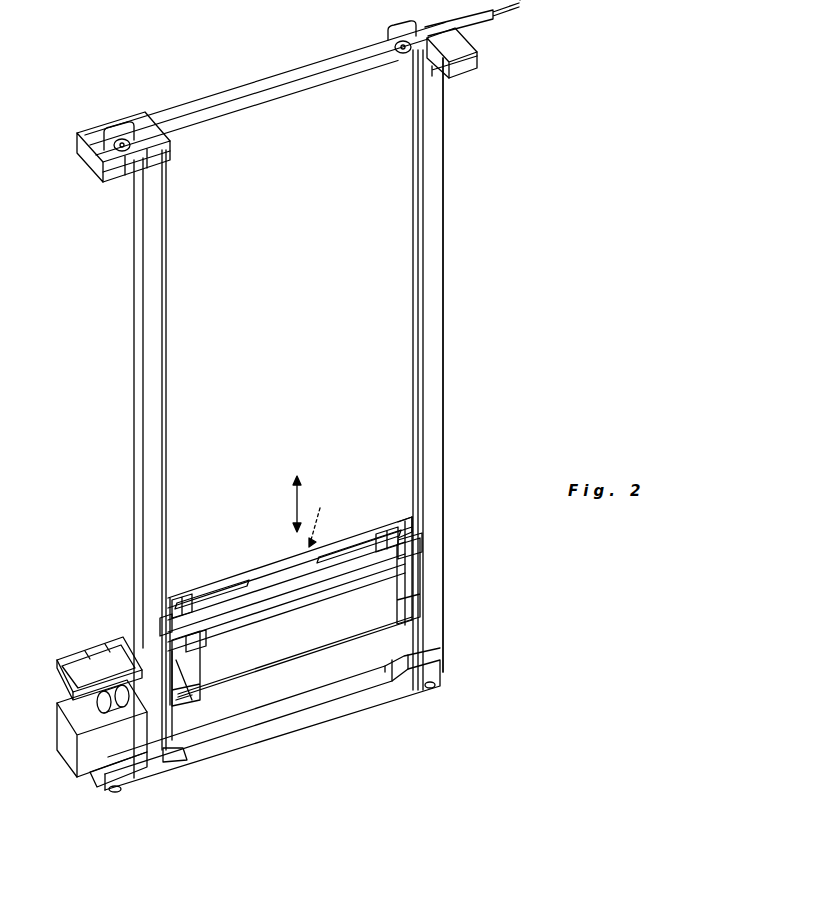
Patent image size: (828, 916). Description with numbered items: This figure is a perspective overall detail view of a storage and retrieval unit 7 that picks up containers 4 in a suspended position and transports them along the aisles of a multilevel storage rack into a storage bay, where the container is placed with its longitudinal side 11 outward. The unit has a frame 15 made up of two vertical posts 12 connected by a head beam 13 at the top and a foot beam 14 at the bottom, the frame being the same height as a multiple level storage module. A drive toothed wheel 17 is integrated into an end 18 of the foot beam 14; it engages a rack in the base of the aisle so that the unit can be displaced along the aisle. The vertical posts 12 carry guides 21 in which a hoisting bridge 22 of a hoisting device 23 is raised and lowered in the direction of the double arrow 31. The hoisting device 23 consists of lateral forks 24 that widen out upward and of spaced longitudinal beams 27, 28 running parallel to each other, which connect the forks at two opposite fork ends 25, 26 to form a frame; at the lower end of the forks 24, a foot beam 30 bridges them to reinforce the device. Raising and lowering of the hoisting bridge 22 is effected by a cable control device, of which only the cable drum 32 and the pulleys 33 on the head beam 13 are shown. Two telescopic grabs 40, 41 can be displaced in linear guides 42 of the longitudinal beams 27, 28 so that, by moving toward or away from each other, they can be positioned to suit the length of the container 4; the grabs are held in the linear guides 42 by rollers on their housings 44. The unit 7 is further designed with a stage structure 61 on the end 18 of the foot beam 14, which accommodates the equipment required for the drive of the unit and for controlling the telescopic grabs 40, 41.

The container 4 is at (306, 640).
The storage and retrieval unit 7 is at (194, 80).
The longitudinal side 11 is at (335, 648).
The vertical post 12 is at (136, 323).
The head beam 13 is at (258, 80).
The foot beam 14 is at (340, 704).
The frame 15 is at (455, 188).
The drive toothed wheel 17 is at (121, 790).
The end of the foot beam 18 is at (90, 789).
The guide 21 is at (166, 363).
The hoisting bridge 22 is at (270, 556).
The hoisting device 23 is at (317, 517).
The lateral fork 24 is at (422, 584).
The fork end 25 is at (403, 520).
The fork end 26 is at (422, 548).
The longitudinal beam 27 is at (292, 563).
The longitudinal beam 28 is at (370, 583).
The foot beam 30 is at (195, 690).
The double arrow 31 is at (297, 489).
The cable drum 32 is at (114, 710).
The pulley 33 is at (120, 137).
The telescopic grab 40 is at (200, 650).
The telescopic grab 41 is at (395, 598).
The linear guide 42 is at (224, 588).
The housing 44 is at (183, 600).
The stage structure 61 is at (60, 697).